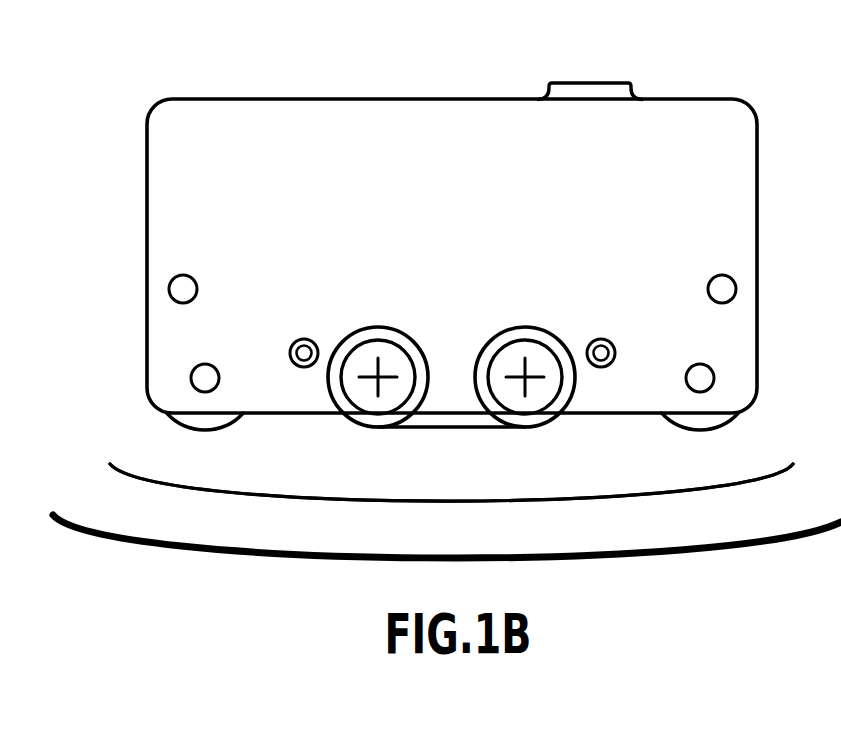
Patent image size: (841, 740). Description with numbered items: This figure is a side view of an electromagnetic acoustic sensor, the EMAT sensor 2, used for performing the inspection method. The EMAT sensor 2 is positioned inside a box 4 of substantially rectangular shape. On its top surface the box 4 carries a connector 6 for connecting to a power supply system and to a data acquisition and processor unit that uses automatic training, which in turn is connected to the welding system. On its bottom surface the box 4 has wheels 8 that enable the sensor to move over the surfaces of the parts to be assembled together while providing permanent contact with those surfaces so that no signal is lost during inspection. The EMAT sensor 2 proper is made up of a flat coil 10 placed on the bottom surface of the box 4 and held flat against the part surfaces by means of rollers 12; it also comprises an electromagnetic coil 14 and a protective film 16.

The EMAT sensor 2 is at (120, 82).
The box 4 is at (163, 167).
The connector 6 is at (590, 96).
The wheels 8 is at (210, 422).
The flat coil 10 is at (442, 500).
The rollers 12 is at (508, 337).
The electromagnetic coil 14 is at (451, 482).
The protective film 16 is at (410, 555).